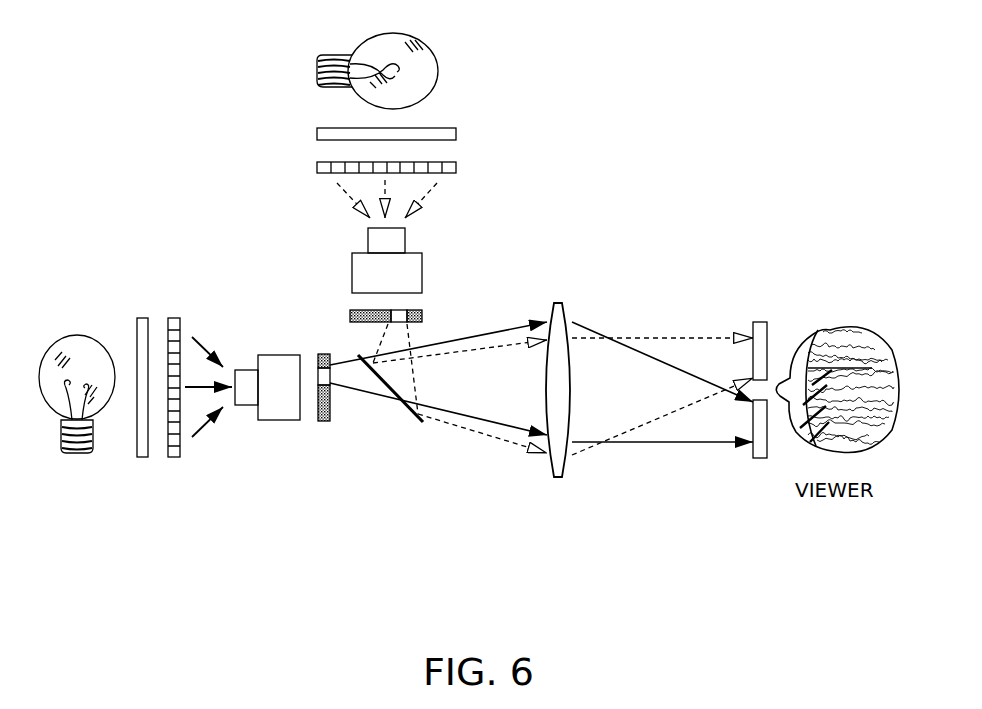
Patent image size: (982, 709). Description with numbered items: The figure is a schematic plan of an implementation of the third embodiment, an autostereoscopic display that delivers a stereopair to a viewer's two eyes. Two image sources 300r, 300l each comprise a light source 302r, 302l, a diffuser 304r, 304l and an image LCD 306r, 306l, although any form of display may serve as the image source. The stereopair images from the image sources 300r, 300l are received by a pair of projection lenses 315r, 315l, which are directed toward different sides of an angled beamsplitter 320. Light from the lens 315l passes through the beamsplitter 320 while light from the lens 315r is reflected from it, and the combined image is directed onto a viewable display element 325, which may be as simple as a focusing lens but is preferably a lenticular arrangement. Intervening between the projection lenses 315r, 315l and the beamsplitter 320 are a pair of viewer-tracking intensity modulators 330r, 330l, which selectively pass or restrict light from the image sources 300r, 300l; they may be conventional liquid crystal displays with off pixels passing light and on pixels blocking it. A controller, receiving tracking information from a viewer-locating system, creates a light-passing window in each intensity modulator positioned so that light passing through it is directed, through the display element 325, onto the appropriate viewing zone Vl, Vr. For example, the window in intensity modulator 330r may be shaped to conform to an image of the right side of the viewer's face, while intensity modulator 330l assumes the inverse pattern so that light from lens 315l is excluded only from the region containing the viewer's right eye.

The image source 300r is at (485, 128).
The image source 300l is at (153, 518).
The light source 302r is at (317, 72).
The light source 302l is at (75, 455).
The diffuser 304r is at (317, 133).
The diffuser 304l is at (140, 458).
The image LCD 306r is at (317, 168).
The image LCD 306l is at (173, 458).
The projection lens 315r is at (422, 272).
The projection lens 315l is at (268, 420).
The viewer-tracking intensity modulator 330r is at (350, 316).
The viewer-tracking intensity modulator 330l is at (325, 421).
The beamsplitter 320 is at (412, 412).
The display element 325 is at (553, 480).
The viewing zone Vr is at (760, 320).
The viewing zone Vl is at (760, 458).